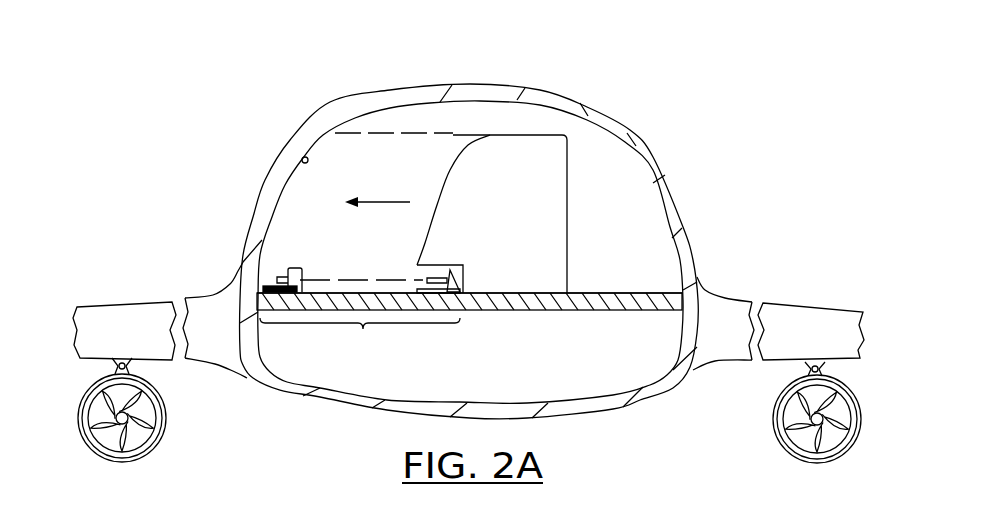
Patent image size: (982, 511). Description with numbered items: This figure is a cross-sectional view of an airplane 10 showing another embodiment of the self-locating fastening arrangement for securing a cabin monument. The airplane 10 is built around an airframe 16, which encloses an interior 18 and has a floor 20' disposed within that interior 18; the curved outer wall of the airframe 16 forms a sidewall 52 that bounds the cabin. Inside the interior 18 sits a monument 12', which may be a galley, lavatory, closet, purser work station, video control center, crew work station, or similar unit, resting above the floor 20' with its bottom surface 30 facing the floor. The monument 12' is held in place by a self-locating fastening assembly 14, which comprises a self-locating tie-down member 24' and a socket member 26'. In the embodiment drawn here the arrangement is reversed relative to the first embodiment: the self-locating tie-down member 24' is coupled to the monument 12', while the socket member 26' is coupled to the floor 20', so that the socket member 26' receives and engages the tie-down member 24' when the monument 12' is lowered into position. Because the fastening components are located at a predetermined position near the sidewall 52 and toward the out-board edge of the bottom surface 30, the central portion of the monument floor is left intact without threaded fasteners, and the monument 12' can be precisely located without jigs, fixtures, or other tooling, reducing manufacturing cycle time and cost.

The airplane 10 is at (325, 42).
The airframe 16 is at (317, 106).
The sidewall 52 is at (302, 158).
The interior 18 is at (495, 125).
The monument 12' is at (433, 214).
The socket member 26' is at (299, 258).
The self-locating tie-down member 24' is at (416, 265).
The floor 20' is at (469, 273).
The bottom surface 30 is at (506, 296).
The self-locating fastening assembly 14 is at (360, 336).